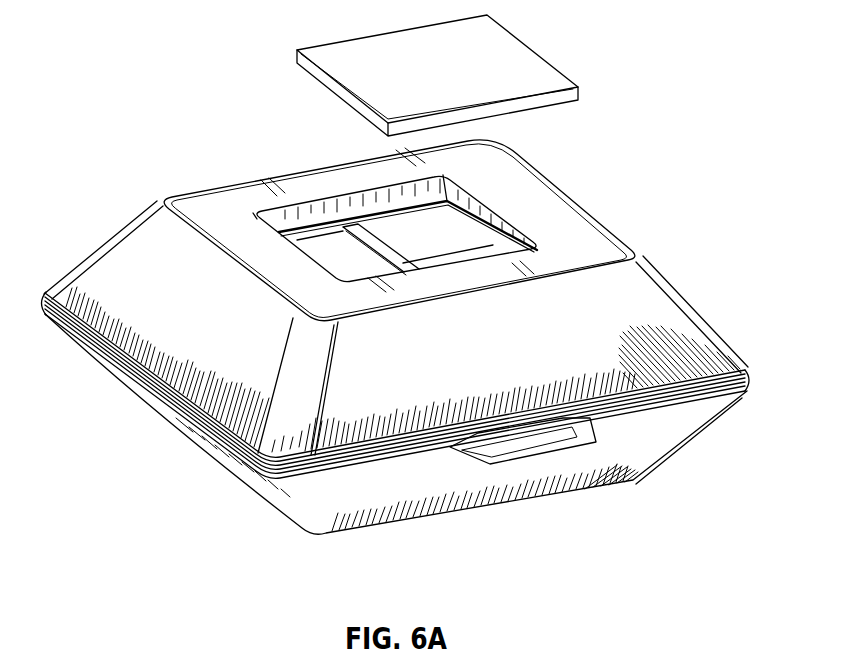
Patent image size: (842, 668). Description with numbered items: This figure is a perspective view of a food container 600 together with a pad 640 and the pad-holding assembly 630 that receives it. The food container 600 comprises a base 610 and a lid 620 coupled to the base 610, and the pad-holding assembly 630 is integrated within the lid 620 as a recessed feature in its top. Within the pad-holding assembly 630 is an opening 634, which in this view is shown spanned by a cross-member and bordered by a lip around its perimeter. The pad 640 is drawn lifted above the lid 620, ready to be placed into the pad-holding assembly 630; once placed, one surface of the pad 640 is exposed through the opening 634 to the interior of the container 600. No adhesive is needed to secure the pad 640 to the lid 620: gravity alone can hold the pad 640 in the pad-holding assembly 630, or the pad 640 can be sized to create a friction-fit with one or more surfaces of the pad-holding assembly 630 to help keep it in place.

The food container 600 is at (178, 470).
The base 610 is at (610, 458).
The lid 620 is at (628, 323).
The pad-holding assembly 630 is at (367, 210).
The opening 634 is at (454, 245).
The pad 640 is at (513, 68).